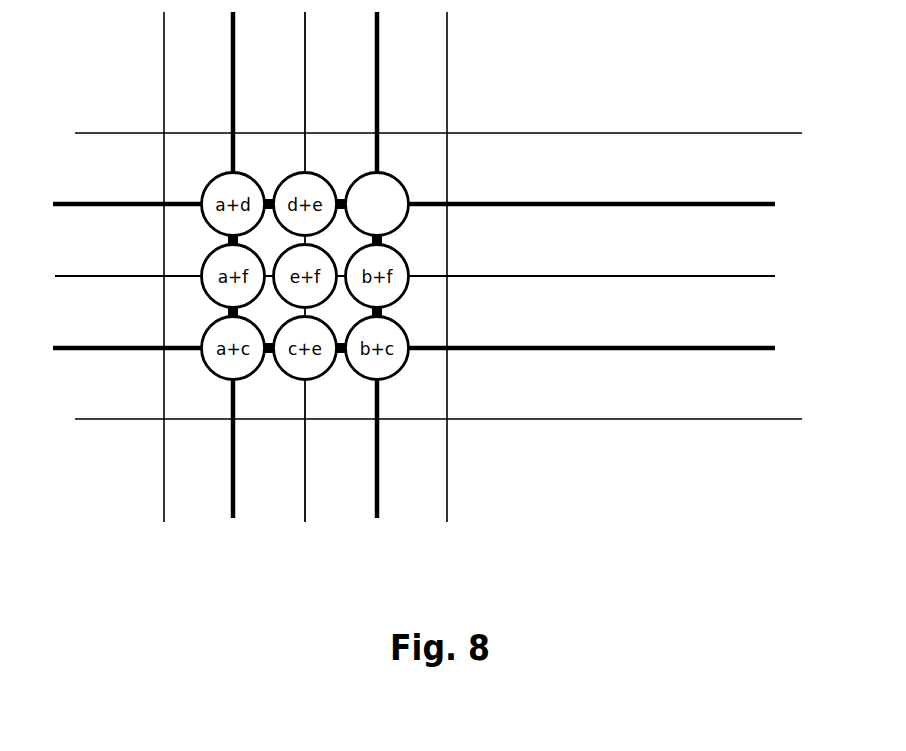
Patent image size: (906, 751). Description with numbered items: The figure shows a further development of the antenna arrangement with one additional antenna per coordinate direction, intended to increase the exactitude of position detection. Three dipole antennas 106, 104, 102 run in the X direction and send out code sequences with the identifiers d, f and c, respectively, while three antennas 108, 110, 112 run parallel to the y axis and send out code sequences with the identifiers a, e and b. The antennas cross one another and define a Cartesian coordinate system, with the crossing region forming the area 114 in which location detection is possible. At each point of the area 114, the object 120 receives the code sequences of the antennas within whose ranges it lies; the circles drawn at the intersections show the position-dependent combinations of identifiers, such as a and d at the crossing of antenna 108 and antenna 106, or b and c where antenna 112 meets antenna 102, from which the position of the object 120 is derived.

The antenna 102 is at (580, 345).
The antenna 104 is at (580, 273).
The antenna 106 is at (580, 201).
The antenna 108 is at (231, 500).
The antenna 110 is at (304, 500).
The antenna 112 is at (375, 500).
The area 114 is at (382, 240).
The object 120 is at (388, 176).